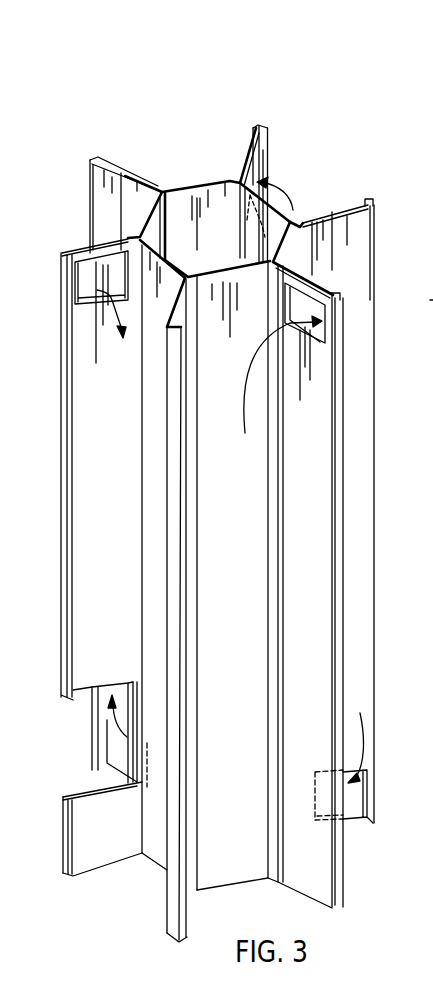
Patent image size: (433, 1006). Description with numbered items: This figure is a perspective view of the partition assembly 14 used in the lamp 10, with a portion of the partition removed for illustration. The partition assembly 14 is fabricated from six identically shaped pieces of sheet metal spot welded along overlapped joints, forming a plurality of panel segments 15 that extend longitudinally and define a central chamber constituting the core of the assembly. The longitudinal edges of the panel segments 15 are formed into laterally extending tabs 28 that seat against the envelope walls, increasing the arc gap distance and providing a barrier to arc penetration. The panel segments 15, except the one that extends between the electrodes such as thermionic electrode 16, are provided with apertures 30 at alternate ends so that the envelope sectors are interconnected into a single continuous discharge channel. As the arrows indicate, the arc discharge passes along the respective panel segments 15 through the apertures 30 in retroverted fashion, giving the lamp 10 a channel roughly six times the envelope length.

The lamp 10 is at (430, 80).
The partition assembly 14 is at (348, 470).
The panel segments 15 is at (145, 186).
The thermionic electrode 16 is at (429, 309).
The tabs 28 is at (263, 125).
The apertures 30 is at (77, 289).